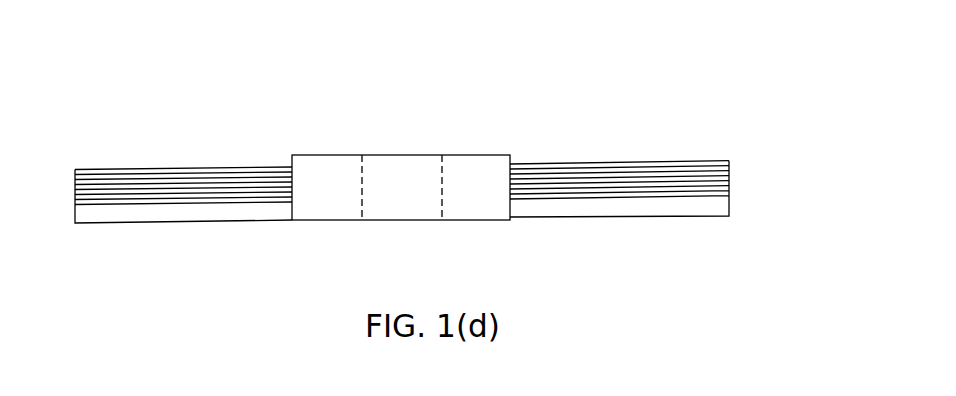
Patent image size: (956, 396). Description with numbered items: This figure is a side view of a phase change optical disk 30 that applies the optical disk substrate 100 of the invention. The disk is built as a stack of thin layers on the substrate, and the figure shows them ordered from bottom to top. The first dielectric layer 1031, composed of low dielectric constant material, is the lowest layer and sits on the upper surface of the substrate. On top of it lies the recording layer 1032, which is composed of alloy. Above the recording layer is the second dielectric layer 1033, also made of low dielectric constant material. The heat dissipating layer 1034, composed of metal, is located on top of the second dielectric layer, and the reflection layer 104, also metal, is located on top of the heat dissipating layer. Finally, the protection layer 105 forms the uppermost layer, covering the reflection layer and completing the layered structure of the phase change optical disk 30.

The phase change optical disk 30 is at (80, 92).
The optical disk substrate 100 is at (466, 156).
The protection layer 105 is at (729, 161).
The reflection layer 104 is at (729, 165).
The heat dissipating layer 1034 is at (729, 173).
The second dielectric layer 1033 is at (729, 180).
The recording layer 1032 is at (729, 187).
The first dielectric layer 1031 is at (729, 193).